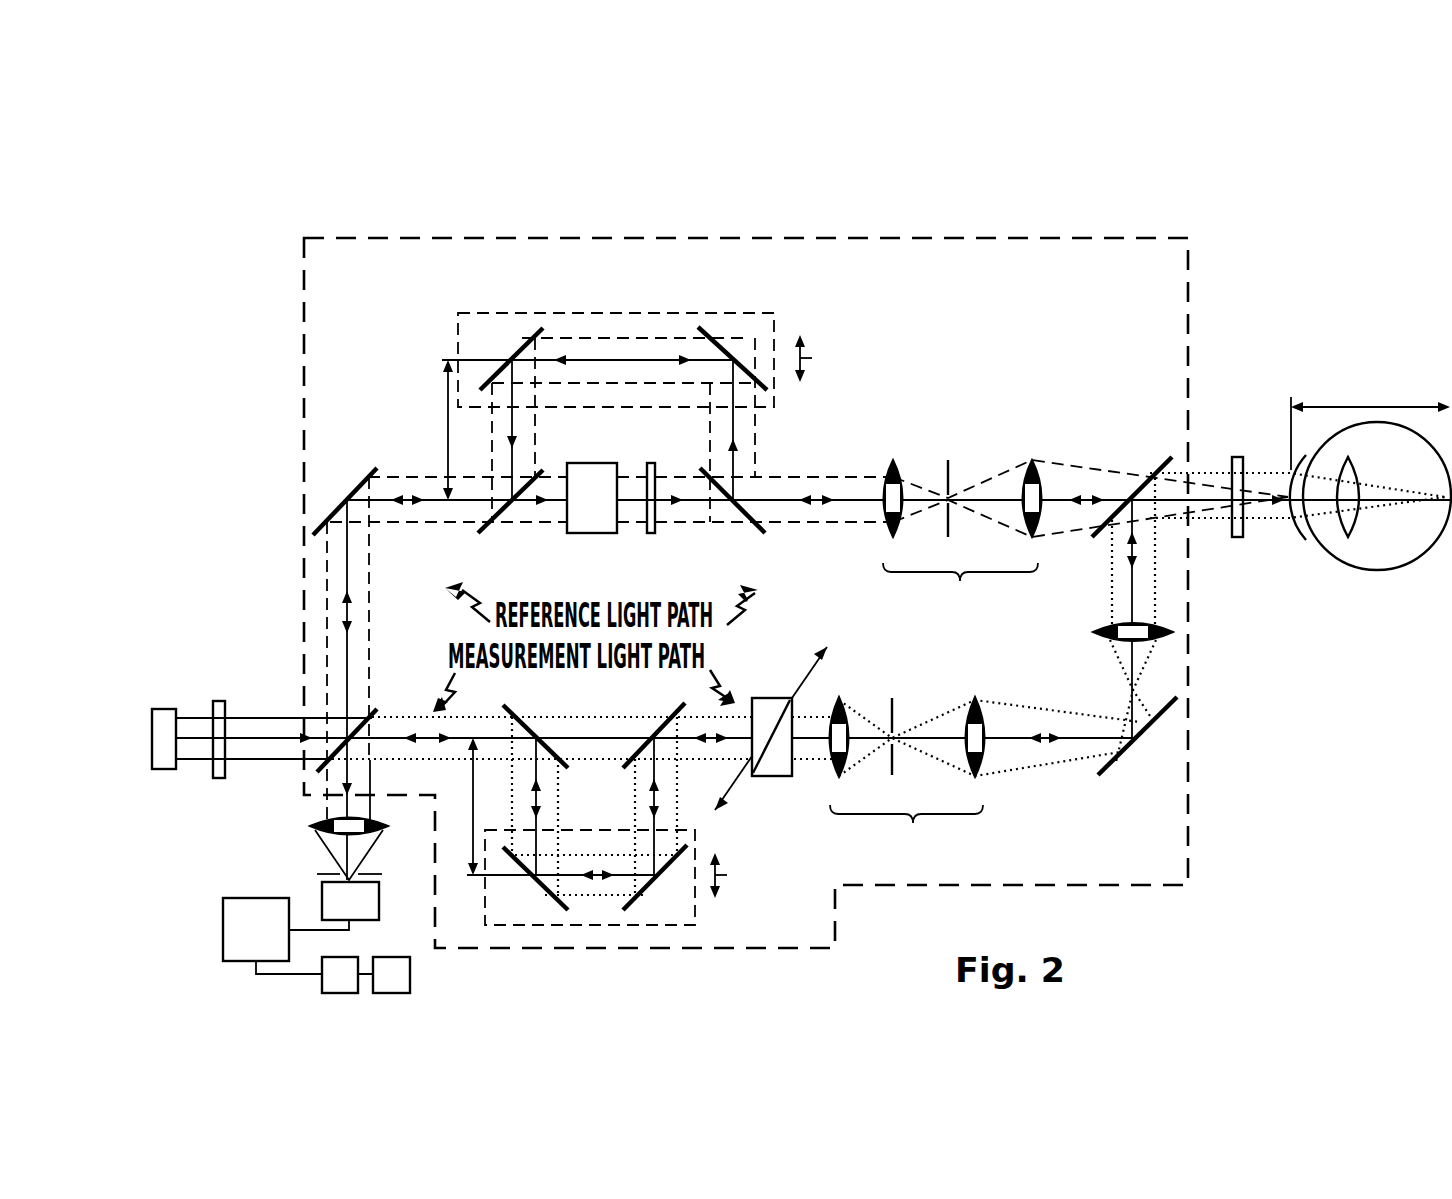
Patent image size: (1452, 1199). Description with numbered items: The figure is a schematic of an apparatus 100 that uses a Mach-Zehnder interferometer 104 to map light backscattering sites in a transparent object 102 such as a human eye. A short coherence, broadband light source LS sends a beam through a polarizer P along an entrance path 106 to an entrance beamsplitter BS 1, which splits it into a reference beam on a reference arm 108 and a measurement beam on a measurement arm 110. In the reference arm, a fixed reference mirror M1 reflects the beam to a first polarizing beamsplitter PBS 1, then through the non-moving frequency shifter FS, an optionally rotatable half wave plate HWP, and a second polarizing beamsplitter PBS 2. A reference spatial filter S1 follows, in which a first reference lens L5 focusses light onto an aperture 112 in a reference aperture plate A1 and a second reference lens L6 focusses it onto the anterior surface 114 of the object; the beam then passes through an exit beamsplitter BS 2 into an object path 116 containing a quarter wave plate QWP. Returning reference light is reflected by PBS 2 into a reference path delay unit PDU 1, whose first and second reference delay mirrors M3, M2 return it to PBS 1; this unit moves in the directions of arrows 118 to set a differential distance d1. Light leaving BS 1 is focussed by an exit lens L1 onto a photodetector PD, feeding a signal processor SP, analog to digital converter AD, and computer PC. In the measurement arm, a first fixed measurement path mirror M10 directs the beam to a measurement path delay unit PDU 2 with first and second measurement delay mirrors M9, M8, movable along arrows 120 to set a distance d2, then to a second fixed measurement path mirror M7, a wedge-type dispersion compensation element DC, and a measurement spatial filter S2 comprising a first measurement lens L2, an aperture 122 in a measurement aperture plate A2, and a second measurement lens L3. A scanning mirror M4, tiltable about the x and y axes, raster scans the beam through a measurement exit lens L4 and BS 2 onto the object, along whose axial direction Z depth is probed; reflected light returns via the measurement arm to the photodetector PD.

The apparatus 100 is at (1354, 452).
The object 102 is at (1383, 565).
The Mach-Zehnder interferometer 104 is at (992, 243).
The entrance path 106 is at (265, 717).
The reference arm 108 is at (350, 612).
The measurement arm 110 is at (423, 740).
The aperture 112 is at (952, 503).
The anterior surface 114 is at (1292, 515).
The object path 116 is at (1210, 470).
The arrows 118 is at (812, 358).
The arrows 120 is at (727, 875).
The aperture 122 is at (895, 745).
The light source LS is at (163, 708).
The polarizer P is at (218, 700).
The entrance beamsplitter BS 1 is at (372, 712).
The exit beamsplitter BS 2 is at (1160, 470).
The fixed reference mirror M1 is at (363, 478).
The second reference delay mirror M2 is at (520, 348).
The first reference delay mirror M3 is at (720, 347).
The scanning mirror M4 is at (1170, 705).
The second fixed measurement path mirror M7 is at (672, 718).
The second measurement delay mirror M8 is at (640, 895).
The first measurement delay mirror M9 is at (545, 893).
The first fixed measurement path mirror M10 is at (520, 715).
The first polarizing beamsplitter PBS 1 is at (490, 525).
The second polarizing beamsplitter PBS 2 is at (748, 522).
The frequency shifter FS is at (585, 533).
The half wave plate HWP is at (652, 533).
The quarter wave plate QWP is at (1238, 457).
The dispersion compensation element DC is at (768, 700).
The exit lens L1 is at (310, 826).
The first measurement lens L2 is at (840, 697).
The second measurement lens L3 is at (975, 697).
The measurement exit lens L4 is at (1170, 628).
The first reference lens L5 is at (893, 460).
The second reference lens L6 is at (1031, 460).
The reference aperture plate A1 is at (950, 460).
The measurement aperture plate A2 is at (893, 698).
The reference spatial filter S1 is at (960, 582).
The measurement spatial filter S2 is at (913, 823).
The reference path delay unit PDU 1 is at (673, 312).
The measurement path delay unit PDU 2 is at (650, 950).
The photodetector PD is at (349, 875).
The signal processor SP is at (256, 929).
The analog to digital converter AD is at (340, 976).
The computer PC is at (391, 976).
The reference path length differential distance d1 is at (448, 422).
The measurement path length differential distance d2 is at (473, 805).
The axial direction Z is at (1383, 407).